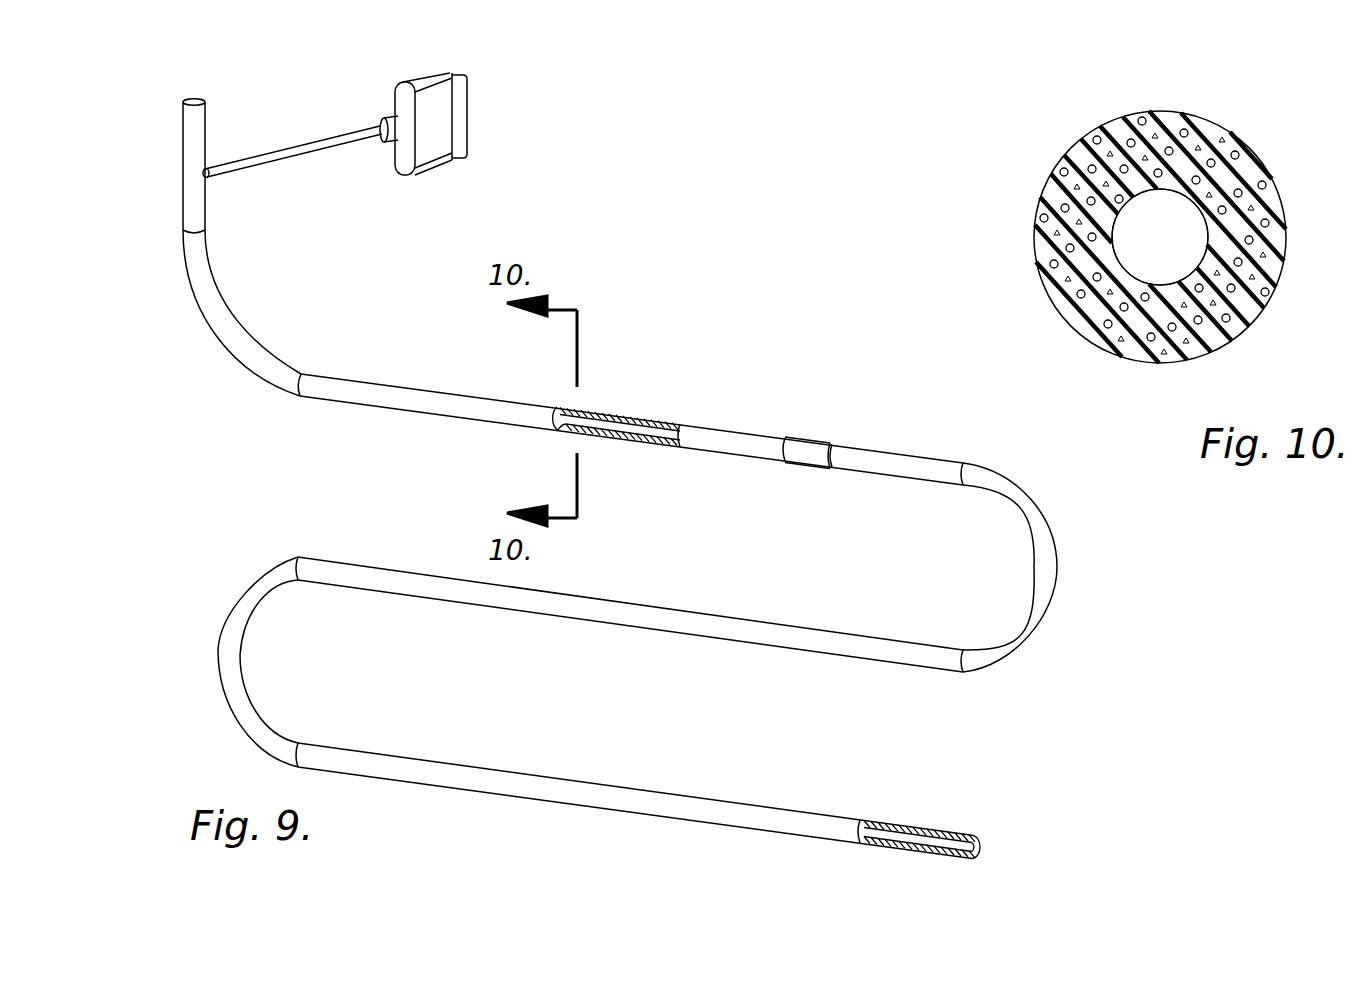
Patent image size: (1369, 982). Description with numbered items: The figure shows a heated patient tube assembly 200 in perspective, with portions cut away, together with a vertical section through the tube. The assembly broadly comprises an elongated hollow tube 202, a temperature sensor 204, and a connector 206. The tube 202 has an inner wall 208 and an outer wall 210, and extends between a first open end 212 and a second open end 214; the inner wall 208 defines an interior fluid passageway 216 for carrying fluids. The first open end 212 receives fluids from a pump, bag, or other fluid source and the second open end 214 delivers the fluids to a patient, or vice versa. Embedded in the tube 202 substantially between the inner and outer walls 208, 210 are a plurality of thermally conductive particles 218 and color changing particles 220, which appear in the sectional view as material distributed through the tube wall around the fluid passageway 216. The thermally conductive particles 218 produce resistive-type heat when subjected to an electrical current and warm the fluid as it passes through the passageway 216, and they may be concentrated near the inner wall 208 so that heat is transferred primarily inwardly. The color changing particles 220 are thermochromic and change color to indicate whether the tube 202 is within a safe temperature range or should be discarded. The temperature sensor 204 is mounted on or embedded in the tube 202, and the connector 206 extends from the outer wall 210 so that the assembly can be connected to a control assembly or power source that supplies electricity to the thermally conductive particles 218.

In FIG. 9, the heated patient tube assembly 200 is at (745, 388).
In FIG. 9, the elongated hollow tube 202 is at (375, 393).
In FIG. 10, the elongated hollow tube 202 is at (1072, 126).
In FIG. 9, the temperature sensor 204 is at (803, 462).
In FIG. 9, the connector 206 is at (481, 105).
In FIG. 10, the inner wall 208 is at (1194, 275).
In FIG. 10, the outer wall 210 is at (1272, 292).
In FIG. 9, the first open end 212 is at (206, 96).
In FIG. 9, the second open end 214 is at (998, 846).
In FIG. 9, the interior fluid passageway 216 is at (620, 412).
In FIG. 10, the interior fluid passageway 216 is at (1207, 240).
In FIG. 10, the thermally conductive particles 218 is at (1068, 316).
In FIG. 10, the color changing particles 220 is at (1265, 185).